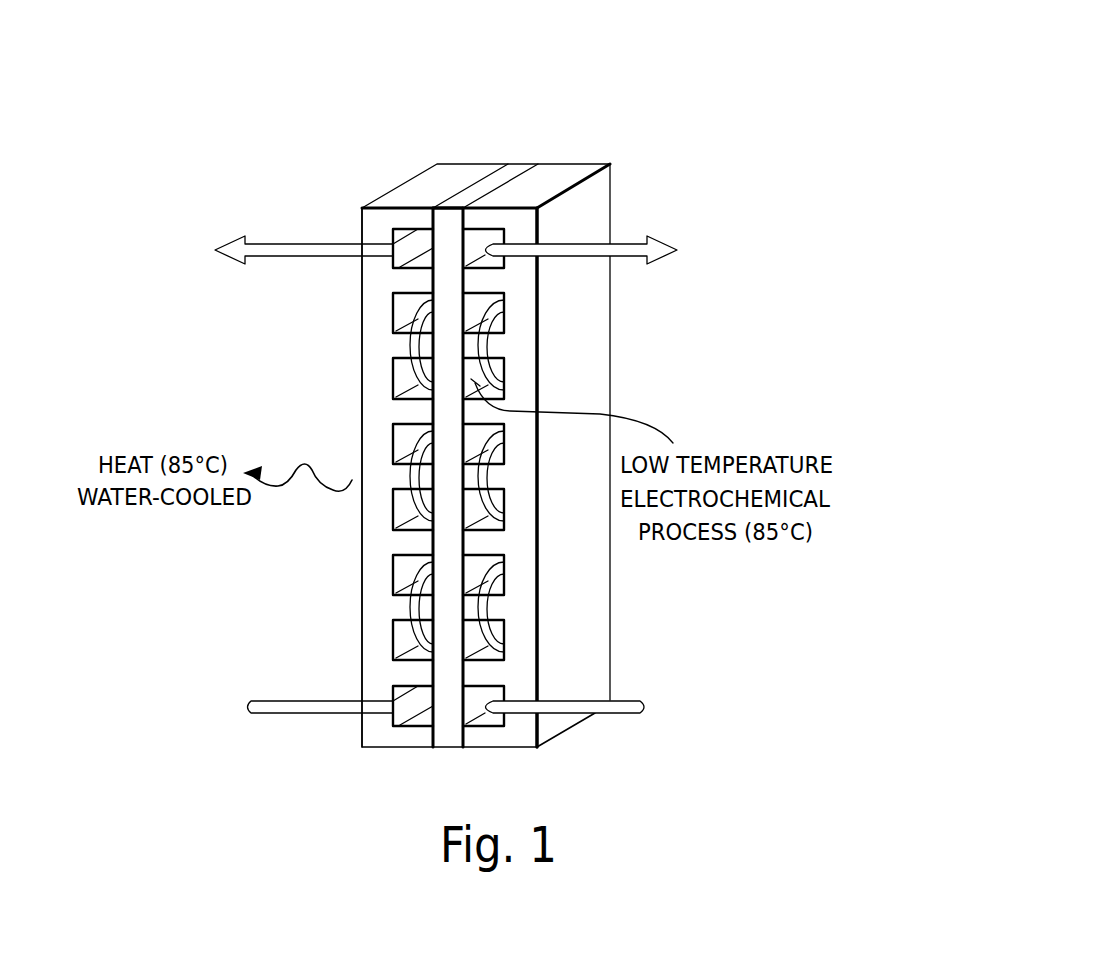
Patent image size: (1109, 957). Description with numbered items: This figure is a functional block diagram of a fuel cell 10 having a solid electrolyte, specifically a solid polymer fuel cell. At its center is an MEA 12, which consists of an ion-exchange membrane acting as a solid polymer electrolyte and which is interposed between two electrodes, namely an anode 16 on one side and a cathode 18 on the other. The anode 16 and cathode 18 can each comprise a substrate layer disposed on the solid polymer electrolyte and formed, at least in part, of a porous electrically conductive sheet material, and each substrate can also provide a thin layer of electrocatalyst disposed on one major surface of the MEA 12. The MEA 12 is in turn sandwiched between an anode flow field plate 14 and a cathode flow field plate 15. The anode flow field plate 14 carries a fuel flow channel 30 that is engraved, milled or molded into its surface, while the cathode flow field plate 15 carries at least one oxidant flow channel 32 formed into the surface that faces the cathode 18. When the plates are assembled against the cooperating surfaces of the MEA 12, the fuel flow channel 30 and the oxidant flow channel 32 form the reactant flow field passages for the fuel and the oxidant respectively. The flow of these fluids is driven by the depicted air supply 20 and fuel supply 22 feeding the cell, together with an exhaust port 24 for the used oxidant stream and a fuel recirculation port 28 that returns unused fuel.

The fuel cell 10 is at (785, 75).
The MEA 12 is at (518, 168).
The anode flow field plate 14 is at (385, 202).
The cathode flow field plate 15 is at (590, 172).
The anode 16 is at (443, 205).
The cathode 18 is at (476, 200).
The air supply 20 is at (637, 700).
The fuel supply 22 is at (273, 702).
The exhaust port 24 is at (624, 252).
The fuel recirculation port 28 is at (282, 257).
The fuel flow channel 30 is at (412, 312).
The oxidant flow channel 32 is at (471, 513).